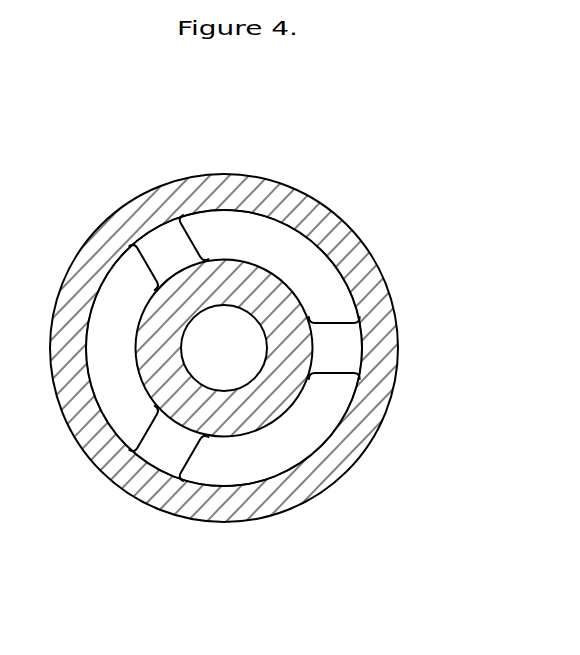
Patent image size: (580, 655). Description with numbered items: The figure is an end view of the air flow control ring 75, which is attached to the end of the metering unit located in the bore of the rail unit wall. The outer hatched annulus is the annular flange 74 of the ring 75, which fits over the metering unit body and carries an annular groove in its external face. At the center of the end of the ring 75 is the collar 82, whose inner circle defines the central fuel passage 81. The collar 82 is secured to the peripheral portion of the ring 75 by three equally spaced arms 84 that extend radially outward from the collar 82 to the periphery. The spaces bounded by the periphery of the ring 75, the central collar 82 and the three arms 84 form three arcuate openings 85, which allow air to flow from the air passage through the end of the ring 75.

The annular flange 74 is at (300, 215).
The air flow control ring 75 is at (397, 248).
The central fuel passage 81 is at (236, 327).
The collar 82 is at (302, 346).
The arms 84 is at (330, 363).
The arcuate openings 85 is at (130, 295).